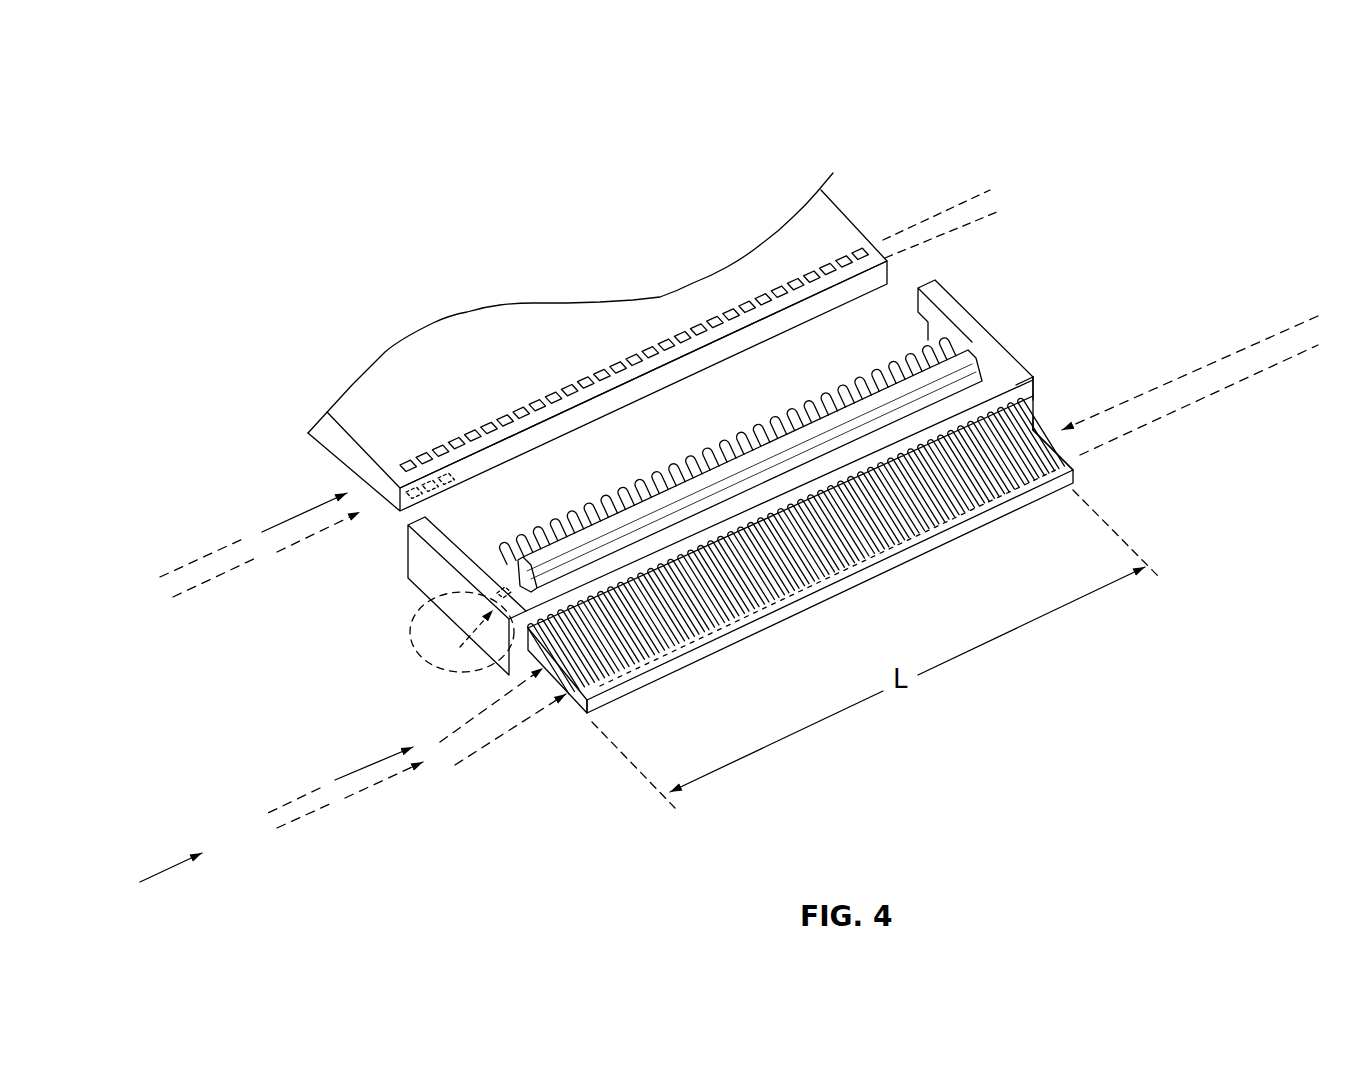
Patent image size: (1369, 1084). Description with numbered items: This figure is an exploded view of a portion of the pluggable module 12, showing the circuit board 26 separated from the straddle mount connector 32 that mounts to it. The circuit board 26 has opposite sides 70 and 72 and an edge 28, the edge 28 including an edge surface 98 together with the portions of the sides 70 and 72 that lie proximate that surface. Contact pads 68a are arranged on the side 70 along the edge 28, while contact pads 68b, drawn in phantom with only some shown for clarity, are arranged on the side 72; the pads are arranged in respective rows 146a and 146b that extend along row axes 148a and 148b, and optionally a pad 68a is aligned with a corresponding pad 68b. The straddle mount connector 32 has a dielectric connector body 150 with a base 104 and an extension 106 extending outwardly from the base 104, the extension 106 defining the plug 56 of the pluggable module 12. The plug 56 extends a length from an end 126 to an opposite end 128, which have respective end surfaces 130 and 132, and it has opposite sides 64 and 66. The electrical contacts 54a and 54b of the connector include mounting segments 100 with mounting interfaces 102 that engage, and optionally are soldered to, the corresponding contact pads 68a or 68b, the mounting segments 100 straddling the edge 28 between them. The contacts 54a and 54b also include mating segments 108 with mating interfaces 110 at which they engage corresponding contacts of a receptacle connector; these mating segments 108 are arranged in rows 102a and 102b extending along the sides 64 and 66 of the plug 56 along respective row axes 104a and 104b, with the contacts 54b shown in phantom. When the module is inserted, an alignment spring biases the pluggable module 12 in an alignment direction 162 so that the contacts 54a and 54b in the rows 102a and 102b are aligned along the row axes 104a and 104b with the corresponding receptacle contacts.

The pluggable module 12 is at (1140, 170).
The circuit board 26 is at (846, 215).
The edge 28 is at (883, 250).
The straddle mount connector 32 is at (1058, 330).
The electrical contacts 54a is at (486, 576).
The electrical contacts 54b is at (430, 660).
The plug 56 is at (1077, 490).
The side 64 is at (1010, 405).
The side 66 is at (897, 577).
The contact pads 68a is at (404, 457).
The contact pads 68b is at (410, 500).
The side 70 is at (661, 298).
The side 72 is at (567, 441).
The edge surface 98 is at (832, 303).
The mounting segments 100 is at (490, 578).
The mounting interfaces 102 is at (490, 572).
The row 102a is at (365, 748).
The row 102b is at (380, 782).
The base 104 is at (1033, 398).
The row axis 104a is at (1270, 345).
The row axis 104b is at (1305, 353).
The extension 106 is at (1073, 452).
The mating segments 108 is at (883, 540).
The mating interfaces 110 is at (877, 540).
The end 126 is at (576, 716).
The end 128 is at (1062, 430).
The end surface 130 is at (548, 683).
The end surface 132 is at (1073, 460).
The row 146a is at (285, 517).
The row 146b is at (290, 545).
The row axis 148a is at (233, 538).
The row axis 148b is at (220, 578).
The dielectric connector body 150 is at (1033, 377).
The alignment direction 162 is at (170, 867).